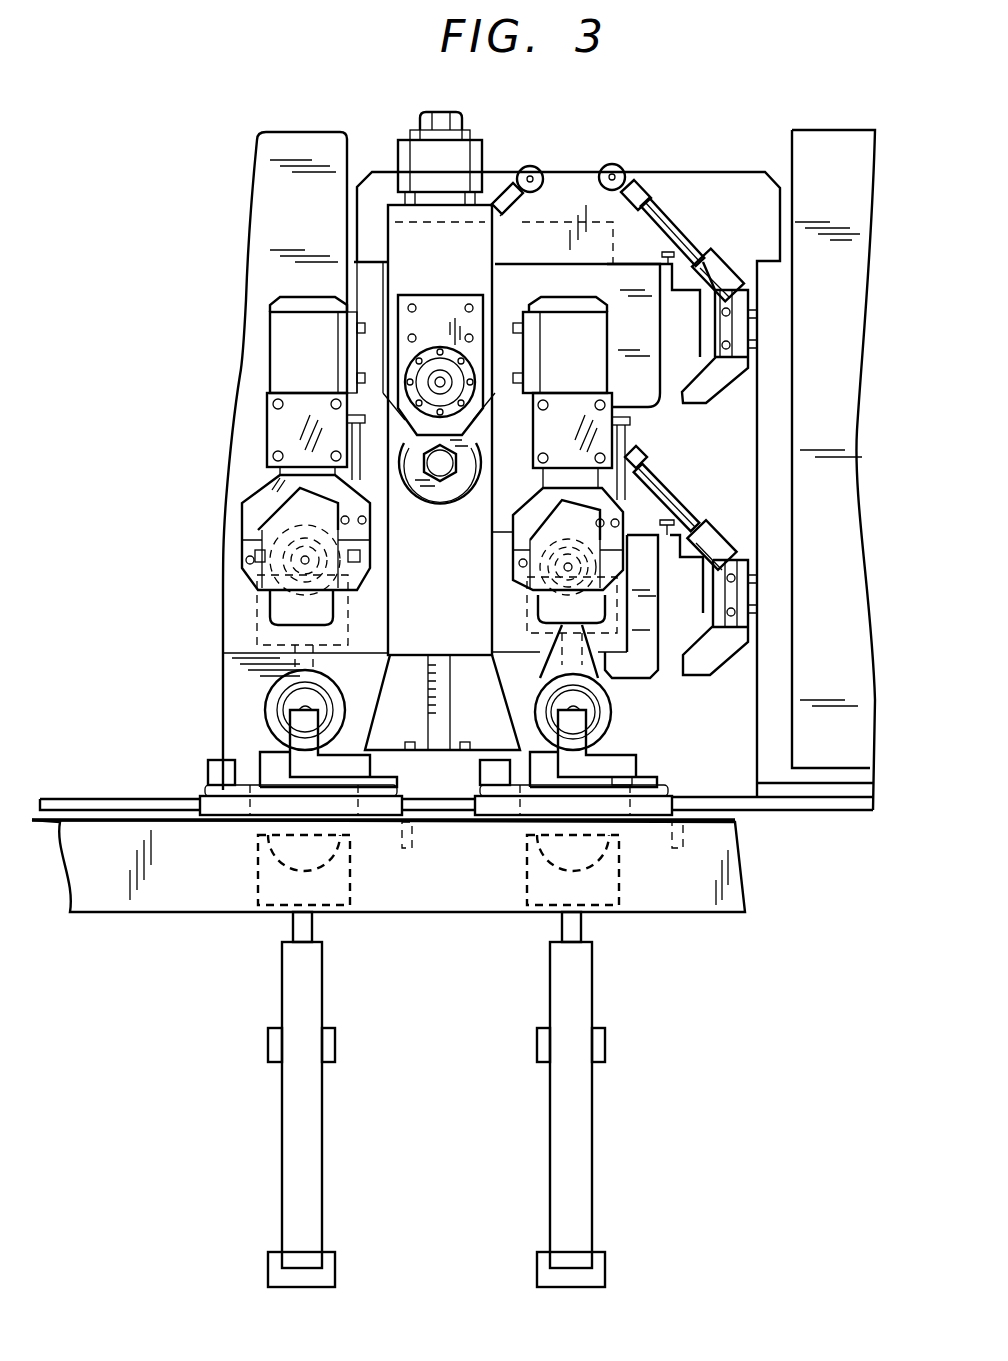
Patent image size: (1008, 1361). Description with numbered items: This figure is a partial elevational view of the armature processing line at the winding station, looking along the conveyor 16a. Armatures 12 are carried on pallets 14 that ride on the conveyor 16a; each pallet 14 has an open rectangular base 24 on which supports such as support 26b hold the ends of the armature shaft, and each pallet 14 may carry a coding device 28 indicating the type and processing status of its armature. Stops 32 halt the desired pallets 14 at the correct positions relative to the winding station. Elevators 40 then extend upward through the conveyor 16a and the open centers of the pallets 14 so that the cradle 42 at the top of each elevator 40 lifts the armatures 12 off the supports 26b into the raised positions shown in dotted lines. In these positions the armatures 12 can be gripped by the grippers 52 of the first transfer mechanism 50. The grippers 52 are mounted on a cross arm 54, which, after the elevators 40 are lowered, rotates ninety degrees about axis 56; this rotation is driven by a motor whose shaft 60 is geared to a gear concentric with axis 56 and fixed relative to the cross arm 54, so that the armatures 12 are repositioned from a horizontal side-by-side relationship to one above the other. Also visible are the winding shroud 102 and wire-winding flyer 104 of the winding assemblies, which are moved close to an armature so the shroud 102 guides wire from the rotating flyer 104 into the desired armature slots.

The armature 12 is at (268, 702).
The pallet 14 is at (145, 782).
The conveyor 16a is at (734, 882).
The open rectangular base 24 is at (223, 822).
The support 26b is at (297, 738).
The coding device 28 is at (208, 770).
The stop 32 is at (403, 855).
The elevator 40 is at (322, 1152).
The cradle 42 is at (262, 920).
The first transfer mechanism 50 is at (222, 367).
The gripper 52 is at (243, 575).
The cross arm 54 is at (266, 310).
The axis 56 is at (440, 478).
The shaft 60 is at (440, 380).
The winding shroud 102 is at (600, 275).
The wire-winding flyer 104 is at (497, 192).